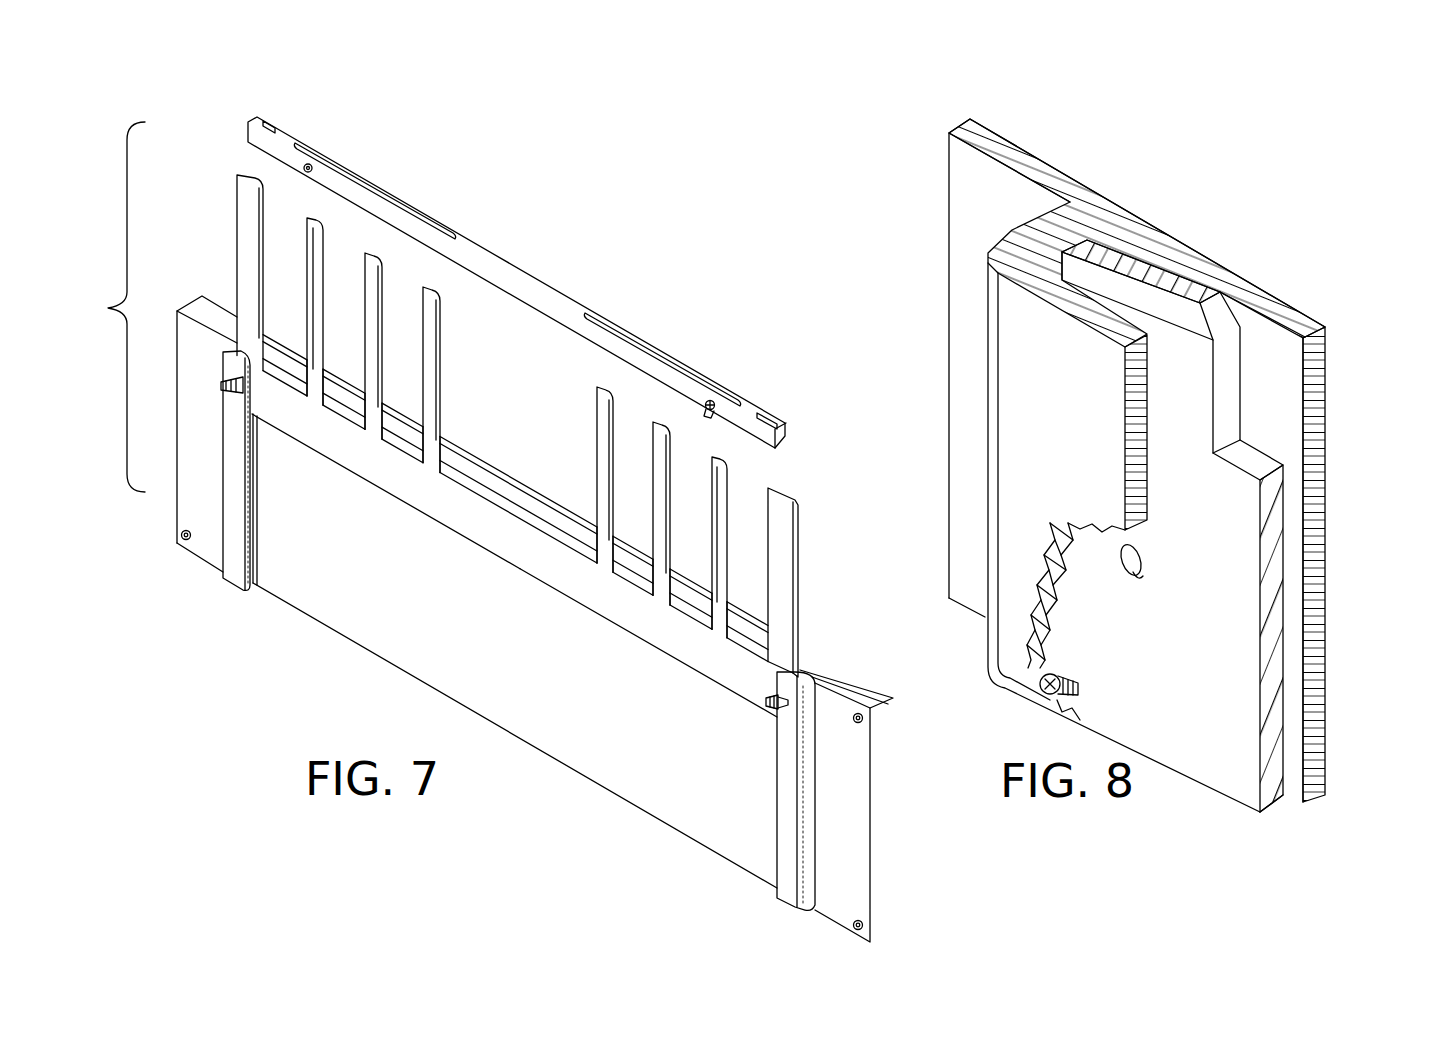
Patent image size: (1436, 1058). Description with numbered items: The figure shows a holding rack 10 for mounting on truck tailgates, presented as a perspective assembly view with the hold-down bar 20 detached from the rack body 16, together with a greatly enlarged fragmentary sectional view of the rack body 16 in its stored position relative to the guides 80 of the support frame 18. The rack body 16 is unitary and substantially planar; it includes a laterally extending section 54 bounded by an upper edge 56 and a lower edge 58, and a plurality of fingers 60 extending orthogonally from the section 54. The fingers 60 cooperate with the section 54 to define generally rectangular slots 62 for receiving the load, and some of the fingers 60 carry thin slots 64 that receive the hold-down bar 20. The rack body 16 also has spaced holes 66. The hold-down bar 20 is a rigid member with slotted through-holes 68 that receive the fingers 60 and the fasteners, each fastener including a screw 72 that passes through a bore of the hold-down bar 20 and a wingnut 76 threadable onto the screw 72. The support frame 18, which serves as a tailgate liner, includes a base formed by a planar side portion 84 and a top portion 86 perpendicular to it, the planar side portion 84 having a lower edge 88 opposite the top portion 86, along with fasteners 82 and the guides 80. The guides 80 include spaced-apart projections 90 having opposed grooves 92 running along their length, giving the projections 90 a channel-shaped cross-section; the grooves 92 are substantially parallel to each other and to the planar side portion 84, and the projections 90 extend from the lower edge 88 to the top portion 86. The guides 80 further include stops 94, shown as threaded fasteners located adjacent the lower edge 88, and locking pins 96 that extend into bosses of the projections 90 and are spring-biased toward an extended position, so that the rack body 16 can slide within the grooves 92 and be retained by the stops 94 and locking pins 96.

In FIG. 7, the holding rack 10 is at (644, 207).
In FIG. 7, the rack body 16 is at (790, 570).
In FIG. 8, the rack body 16 is at (1240, 600).
In FIG. 7, the support frame 18 is at (502, 480).
In FIG. 8, the support frame 18 is at (1288, 378).
In FIG. 7, the hold-down bar 20 is at (518, 273).
In FIG. 7, the laterally extending section 54 is at (620, 610).
In FIG. 8, the laterally extending section 54 is at (1275, 695).
In FIG. 7, the upper edge 56 is at (283, 382).
In FIG. 8, the upper edge 56 is at (1262, 462).
In FIG. 7, the lower edge 58 is at (443, 525).
In FIG. 8, the lower edge 58 is at (1272, 806).
In FIG. 7, the fingers 60 is at (252, 204).
In FIG. 8, the fingers 60 is at (1153, 288).
In FIG. 7, the slots 62 is at (428, 360).
In FIG. 7, the thin slots 64 is at (318, 213).
In FIG. 8, the holes 66 is at (1133, 565).
In FIG. 7, the slotted through-holes 68 is at (372, 183).
In FIG. 7, the screw 72 is at (706, 403).
In FIG. 7, the wingnut 76 is at (711, 413).
In FIG. 7, the guides 80 is at (790, 755).
In FIG. 8, the guides 80 is at (1050, 258).
In FIG. 7, the fasteners 82 is at (180, 537).
In FIG. 7, the planar side portion 84 is at (848, 843).
In FIG. 8, the planar side portion 84 is at (968, 378).
In FIG. 7, the top portion 86 is at (855, 683).
In FIG. 7, the lower edge 88 is at (443, 697).
In FIG. 8, the lower edge 88 is at (1318, 797).
In FIG. 7, the projections 90 is at (238, 554).
In FIG. 8, the projections 90 is at (1020, 500).
In FIG. 7, the grooves 92 is at (255, 510).
In FIG. 8, the grooves 92 is at (1023, 282).
In FIG. 7, the stops 94 is at (232, 582).
In FIG. 8, the stops 94 is at (1065, 670).
In FIG. 7, the locking pins 96 is at (769, 711).